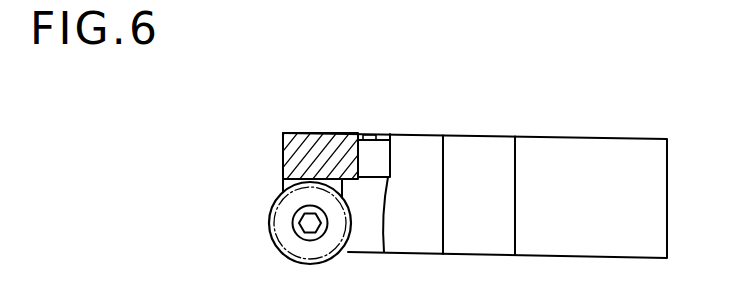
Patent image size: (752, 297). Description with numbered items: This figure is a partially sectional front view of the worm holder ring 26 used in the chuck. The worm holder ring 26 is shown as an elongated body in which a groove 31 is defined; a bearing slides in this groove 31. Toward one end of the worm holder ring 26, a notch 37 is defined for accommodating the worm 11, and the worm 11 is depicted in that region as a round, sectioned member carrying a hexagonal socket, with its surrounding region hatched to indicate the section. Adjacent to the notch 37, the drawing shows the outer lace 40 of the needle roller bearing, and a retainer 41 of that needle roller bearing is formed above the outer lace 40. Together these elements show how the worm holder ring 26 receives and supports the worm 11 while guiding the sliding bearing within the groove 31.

The worm 11 is at (272, 229).
The worm holder ring 26 is at (592, 158).
The groove 31 is at (492, 155).
The notch 37 is at (282, 188).
The outer lace 40 is at (358, 167).
The retainer 41 is at (373, 135).